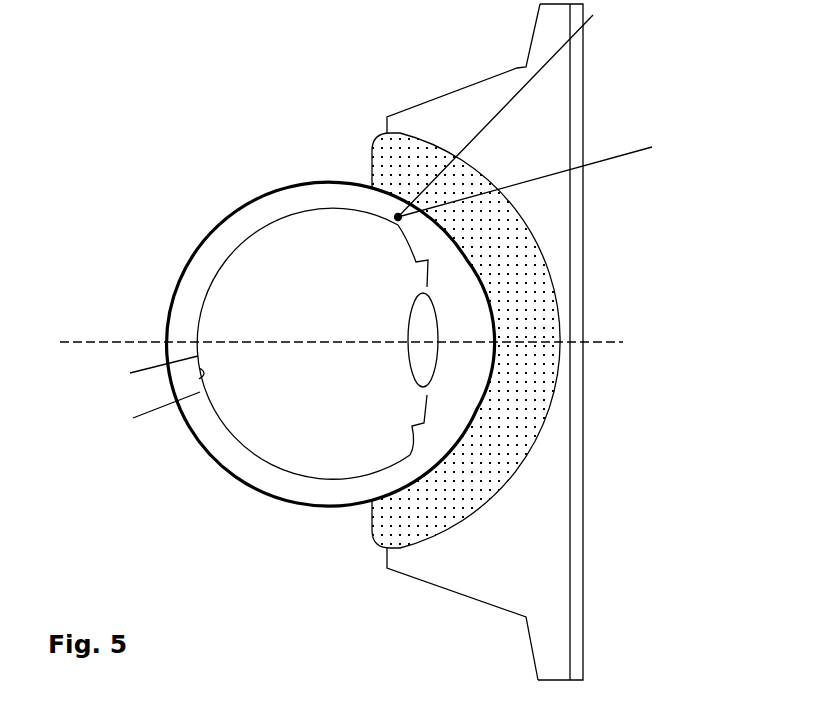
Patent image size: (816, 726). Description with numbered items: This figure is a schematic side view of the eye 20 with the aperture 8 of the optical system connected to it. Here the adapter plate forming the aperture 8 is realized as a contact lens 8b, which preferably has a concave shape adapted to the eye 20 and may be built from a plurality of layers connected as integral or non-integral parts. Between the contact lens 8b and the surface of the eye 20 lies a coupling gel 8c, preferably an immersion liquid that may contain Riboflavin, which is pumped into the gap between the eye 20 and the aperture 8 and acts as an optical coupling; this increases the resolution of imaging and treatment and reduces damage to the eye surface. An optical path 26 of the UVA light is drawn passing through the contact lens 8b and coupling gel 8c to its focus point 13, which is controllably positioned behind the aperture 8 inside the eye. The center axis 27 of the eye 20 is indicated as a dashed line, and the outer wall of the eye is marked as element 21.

The aperture 8 is at (577, 208).
The contact lens 8b is at (448, 107).
The coupling gel 8c is at (383, 153).
The focus point 13 is at (395, 223).
The eye 20 is at (312, 296).
The sclera / eye outer surface 21 is at (315, 176).
The optical path 26 is at (610, 157).
The center axis 27 is at (603, 343).